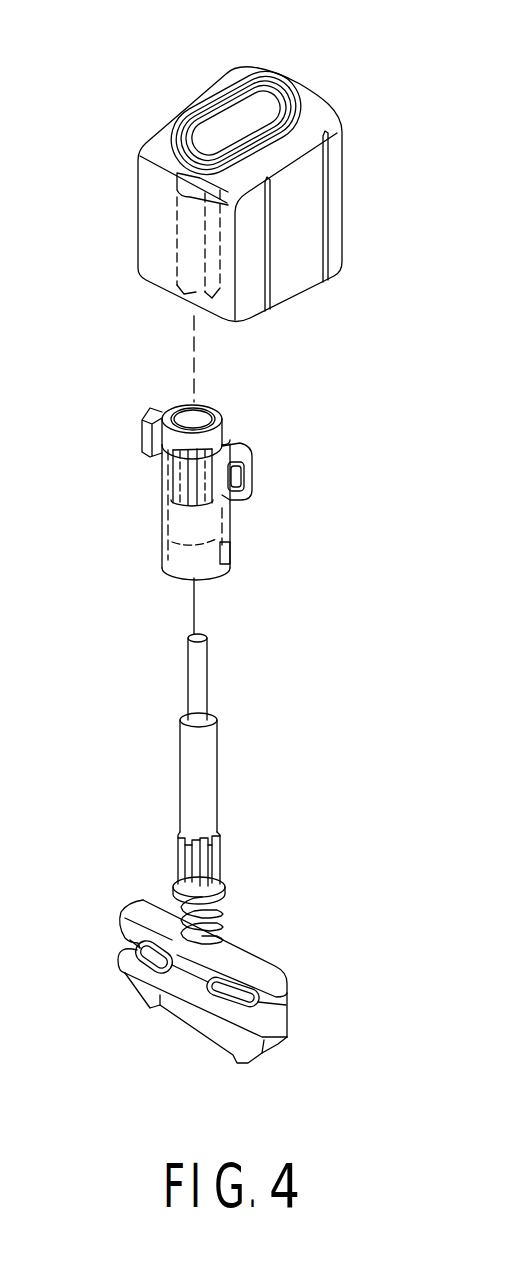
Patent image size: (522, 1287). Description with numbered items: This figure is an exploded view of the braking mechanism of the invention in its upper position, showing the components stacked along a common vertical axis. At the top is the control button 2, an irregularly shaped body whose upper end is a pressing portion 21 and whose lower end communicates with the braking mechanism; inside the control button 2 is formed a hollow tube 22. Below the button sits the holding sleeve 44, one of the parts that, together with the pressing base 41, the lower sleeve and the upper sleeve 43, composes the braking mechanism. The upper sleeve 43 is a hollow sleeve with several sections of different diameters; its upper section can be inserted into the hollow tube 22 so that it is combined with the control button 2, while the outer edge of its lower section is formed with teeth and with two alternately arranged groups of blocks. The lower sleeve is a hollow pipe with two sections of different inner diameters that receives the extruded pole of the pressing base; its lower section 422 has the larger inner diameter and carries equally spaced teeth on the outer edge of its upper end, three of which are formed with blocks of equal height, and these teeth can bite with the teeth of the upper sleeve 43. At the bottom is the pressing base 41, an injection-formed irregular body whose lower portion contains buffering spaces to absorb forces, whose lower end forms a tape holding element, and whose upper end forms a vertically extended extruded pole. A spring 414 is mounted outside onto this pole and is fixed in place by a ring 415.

The control button 2 is at (343, 197).
The pressing portion 21 is at (230, 128).
The hollow tube 22 is at (190, 230).
The holding sleeve 44 is at (163, 515).
The upper sleeve 43 is at (220, 769).
The lower section 422 is at (187, 868).
The ring 415 is at (223, 878).
The spring 414 is at (223, 911).
The pressing base 41 is at (112, 942).